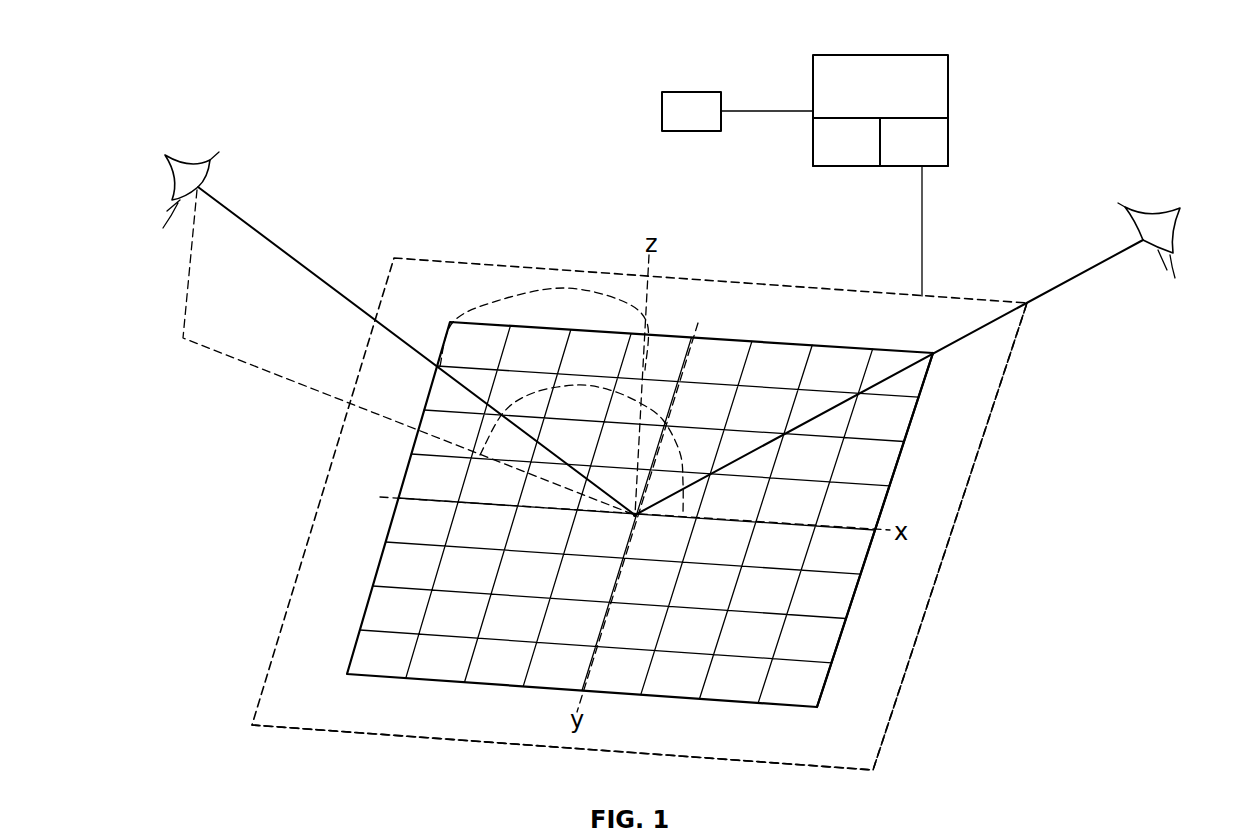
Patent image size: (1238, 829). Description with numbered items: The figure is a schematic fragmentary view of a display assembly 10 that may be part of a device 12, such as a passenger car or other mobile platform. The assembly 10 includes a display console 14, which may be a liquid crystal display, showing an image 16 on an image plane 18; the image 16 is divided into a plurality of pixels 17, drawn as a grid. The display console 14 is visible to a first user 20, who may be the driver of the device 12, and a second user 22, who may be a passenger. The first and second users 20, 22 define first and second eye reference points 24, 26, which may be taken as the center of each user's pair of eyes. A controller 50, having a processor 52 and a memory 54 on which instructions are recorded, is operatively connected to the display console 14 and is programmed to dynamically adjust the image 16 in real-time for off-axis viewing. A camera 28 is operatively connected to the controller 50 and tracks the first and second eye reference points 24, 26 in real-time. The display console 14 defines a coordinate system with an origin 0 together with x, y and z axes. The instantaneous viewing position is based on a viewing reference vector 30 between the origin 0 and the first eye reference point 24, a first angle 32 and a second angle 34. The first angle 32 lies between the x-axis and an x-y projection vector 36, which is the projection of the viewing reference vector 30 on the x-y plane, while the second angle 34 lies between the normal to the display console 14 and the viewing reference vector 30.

The origin 0 is at (635, 517).
The display assembly 10 is at (880, 785).
The device 12 is at (563, 775).
The display console 14 is at (910, 730).
The image 16 is at (912, 430).
The pixels 17 is at (877, 480).
The image plane 18 is at (882, 687).
The first user 20 is at (178, 142).
The second user 22 is at (1160, 180).
The first eye reference point 24 is at (168, 229).
The second eye reference point 26 is at (1175, 280).
The camera 28 is at (675, 92).
The viewing reference vector 30 is at (300, 257).
The first angle 32 is at (547, 388).
The second angle 34 is at (500, 302).
The x-y projection vector 36 is at (273, 373).
The controller 50 is at (830, 55).
The processor 52 is at (813, 152).
The memory 54 is at (948, 152).